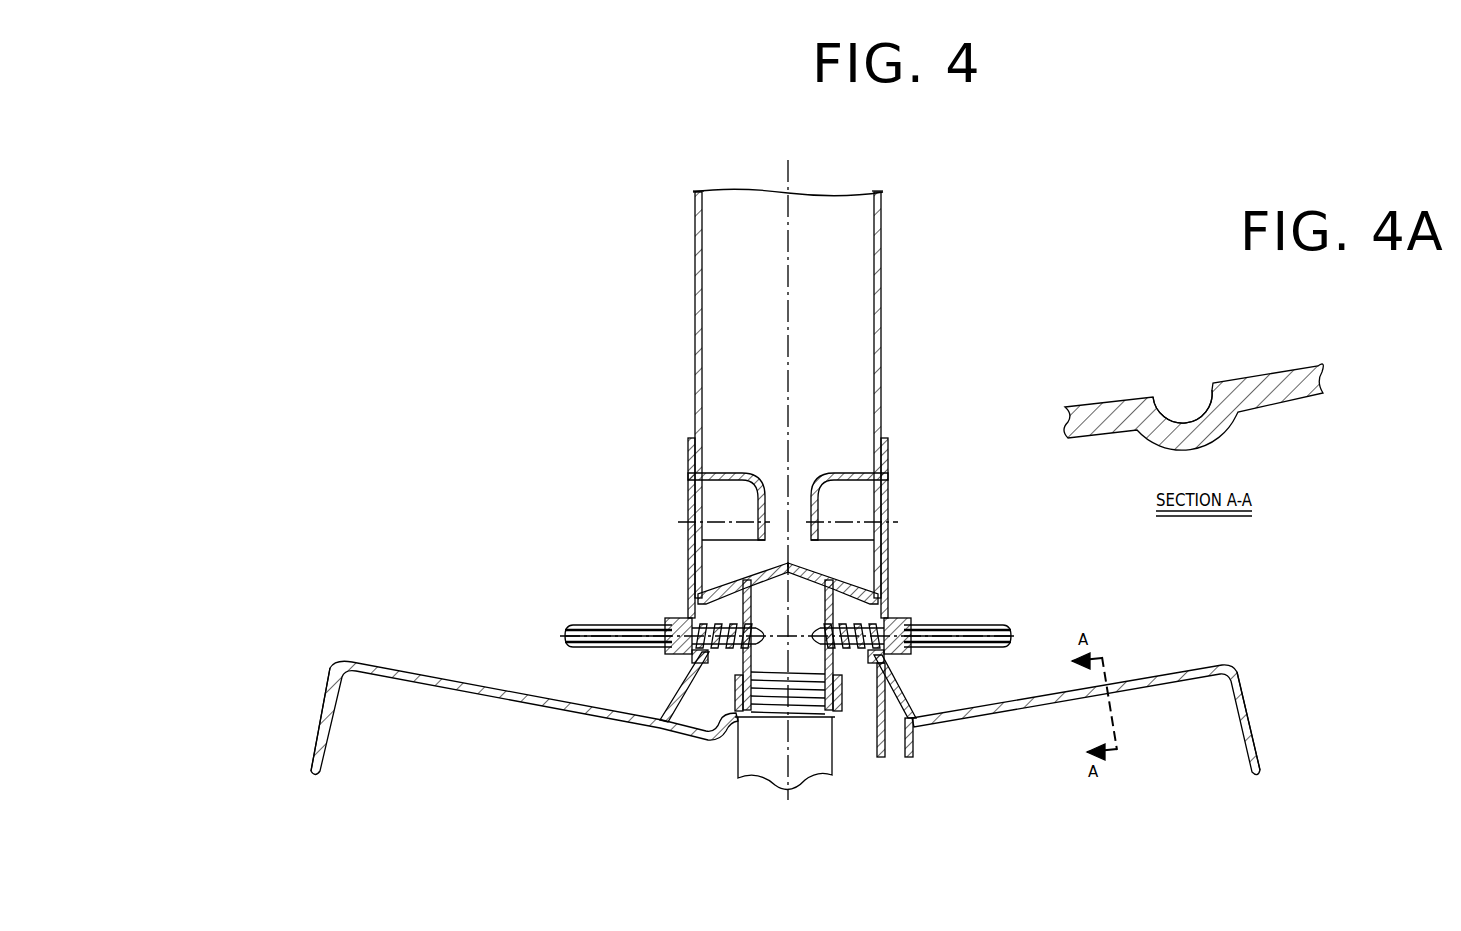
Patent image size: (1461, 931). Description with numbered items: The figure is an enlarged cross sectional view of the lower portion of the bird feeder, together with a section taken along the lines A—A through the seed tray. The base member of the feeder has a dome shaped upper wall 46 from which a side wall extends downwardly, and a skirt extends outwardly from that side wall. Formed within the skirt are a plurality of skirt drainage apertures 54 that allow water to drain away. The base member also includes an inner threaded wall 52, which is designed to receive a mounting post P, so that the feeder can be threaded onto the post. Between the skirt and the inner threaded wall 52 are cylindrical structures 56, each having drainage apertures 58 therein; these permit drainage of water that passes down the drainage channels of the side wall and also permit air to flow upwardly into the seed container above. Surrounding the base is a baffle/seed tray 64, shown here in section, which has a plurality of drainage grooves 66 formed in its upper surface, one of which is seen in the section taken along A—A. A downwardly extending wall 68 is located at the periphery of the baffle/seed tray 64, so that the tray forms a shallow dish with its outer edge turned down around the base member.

In FIG. 4, the dome shaped upper wall 46 is at (816, 576).
In FIG. 4, the inner threaded wall 52 is at (778, 655).
In FIG. 4, the skirt drainage apertures 54 is at (907, 743).
In FIG. 4, the cylindrical structures 56 is at (885, 743).
In FIG. 4, the drainage apertures 58 is at (890, 743).
In FIG. 4, the baffle/seed tray 64 is at (1200, 671).
In FIG. 4A, the baffle/seed tray 64 is at (1295, 402).
In FIG. 4A, the drainage grooves 66 is at (1185, 392).
In FIG. 4, the downwardly extending wall 68 is at (323, 738).
In FIG. 4, the mounting post P is at (738, 780).